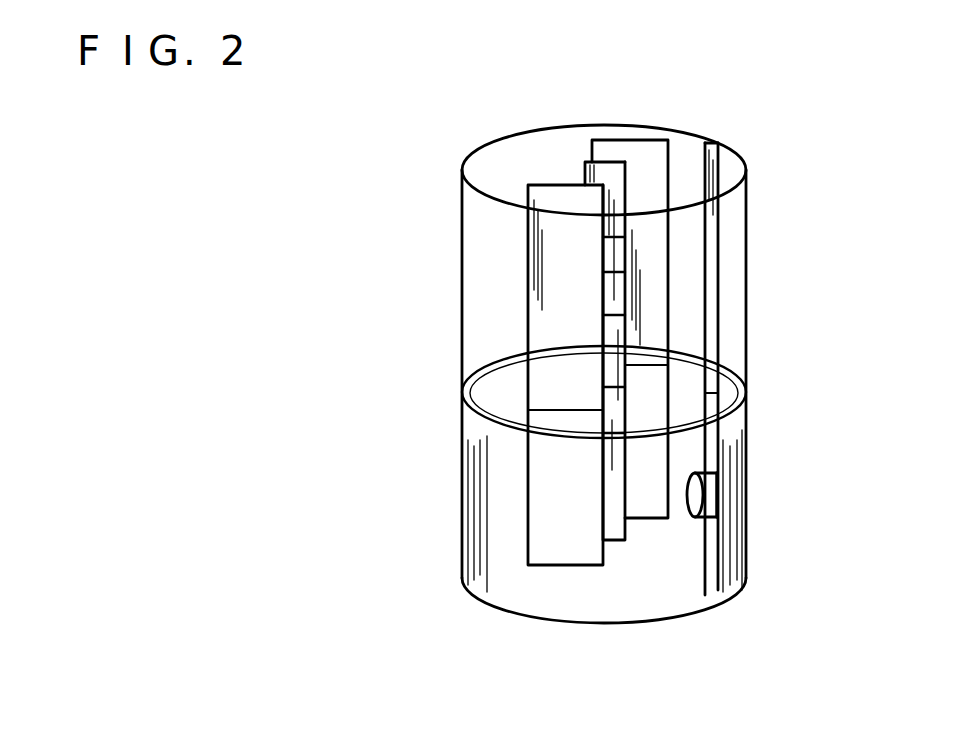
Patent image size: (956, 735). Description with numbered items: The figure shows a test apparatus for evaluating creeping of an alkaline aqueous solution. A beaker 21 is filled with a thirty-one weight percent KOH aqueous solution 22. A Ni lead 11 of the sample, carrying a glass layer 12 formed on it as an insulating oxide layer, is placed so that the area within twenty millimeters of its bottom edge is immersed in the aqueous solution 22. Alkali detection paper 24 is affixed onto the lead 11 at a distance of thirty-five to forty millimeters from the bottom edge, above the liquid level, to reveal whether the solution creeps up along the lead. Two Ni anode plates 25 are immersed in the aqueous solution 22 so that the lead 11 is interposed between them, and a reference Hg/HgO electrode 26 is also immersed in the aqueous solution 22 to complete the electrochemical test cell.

The Ni lead 11 is at (585, 170).
The glass layer 12 is at (628, 293).
The beaker 21 is at (478, 257).
The KOH aqueous solution 22 is at (488, 487).
The alkali detection paper 24 is at (628, 247).
The Ni anode plates 25 is at (640, 160).
The reference Hg/HgO electrode 26 is at (705, 492).